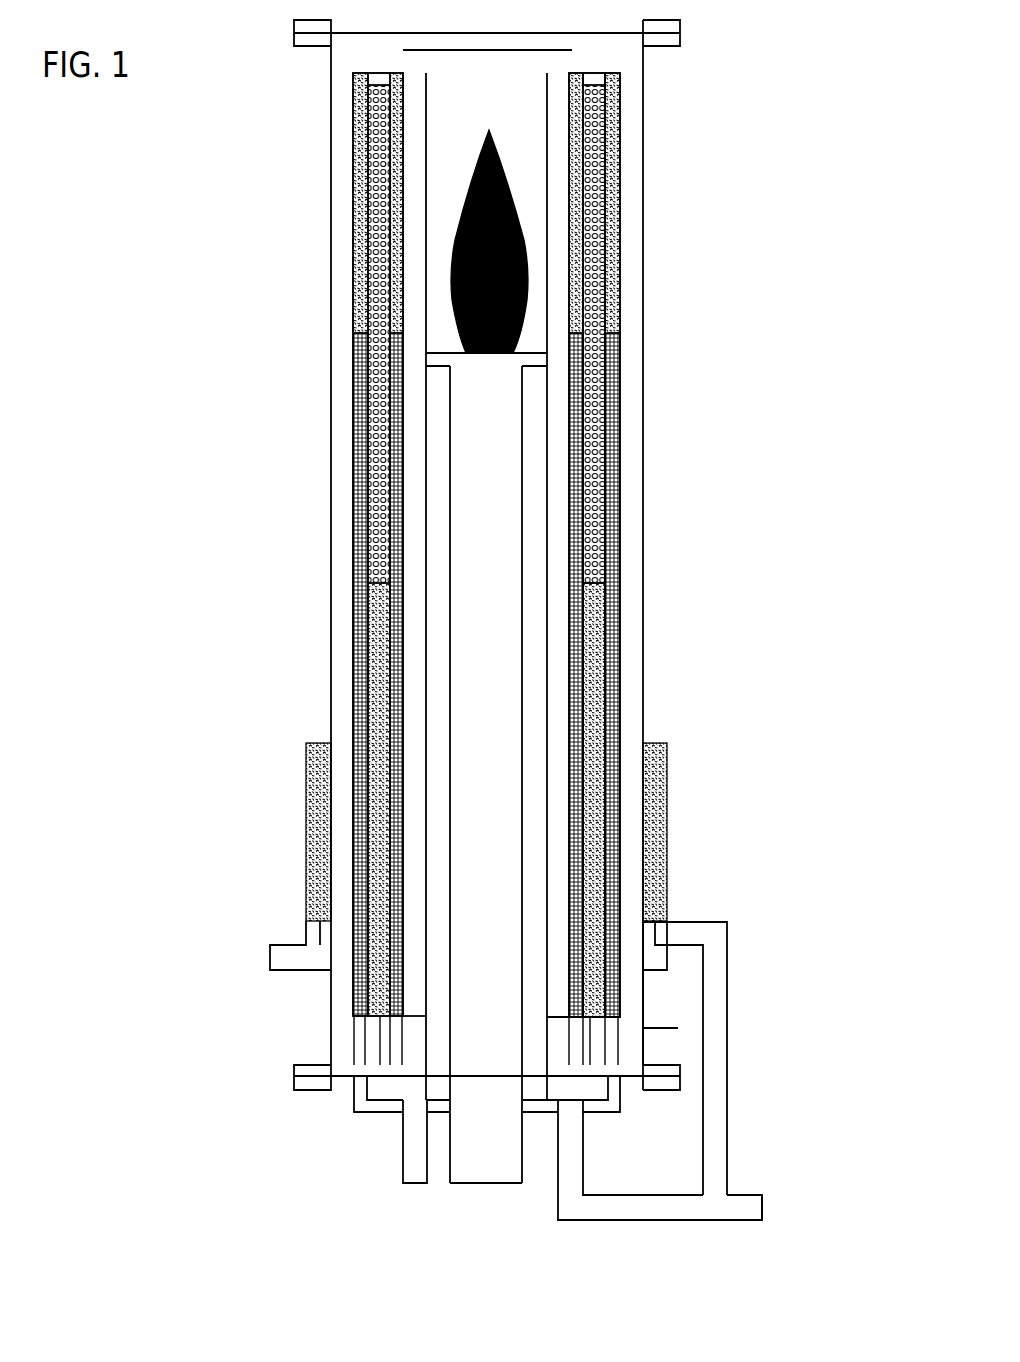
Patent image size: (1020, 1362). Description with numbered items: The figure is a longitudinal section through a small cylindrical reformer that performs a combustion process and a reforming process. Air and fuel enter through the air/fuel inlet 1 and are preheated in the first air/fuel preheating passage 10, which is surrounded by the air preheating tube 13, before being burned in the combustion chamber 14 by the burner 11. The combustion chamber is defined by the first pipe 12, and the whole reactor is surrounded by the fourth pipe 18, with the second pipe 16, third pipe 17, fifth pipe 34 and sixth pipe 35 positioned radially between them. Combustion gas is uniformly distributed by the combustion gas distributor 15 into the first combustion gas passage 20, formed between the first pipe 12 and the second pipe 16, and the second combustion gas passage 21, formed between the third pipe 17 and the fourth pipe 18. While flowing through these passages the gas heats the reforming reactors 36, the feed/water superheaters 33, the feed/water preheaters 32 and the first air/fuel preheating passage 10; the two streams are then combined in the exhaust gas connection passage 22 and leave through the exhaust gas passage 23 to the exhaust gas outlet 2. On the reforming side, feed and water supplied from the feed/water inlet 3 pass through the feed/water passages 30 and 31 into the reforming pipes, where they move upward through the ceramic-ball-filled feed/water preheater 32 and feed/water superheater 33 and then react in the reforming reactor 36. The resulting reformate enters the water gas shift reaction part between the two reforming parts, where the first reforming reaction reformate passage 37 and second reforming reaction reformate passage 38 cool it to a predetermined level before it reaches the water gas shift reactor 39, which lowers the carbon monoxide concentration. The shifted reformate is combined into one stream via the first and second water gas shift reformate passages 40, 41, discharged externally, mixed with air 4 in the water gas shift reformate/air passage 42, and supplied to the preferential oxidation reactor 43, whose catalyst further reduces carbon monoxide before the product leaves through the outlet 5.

The air/fuel inlet 1 is at (487, 1183).
The exhaust gas outlet 2 is at (665, 1017).
The feed/water inlet 3 is at (413, 1183).
The air 4 is at (752, 1208).
The outlet 5 is at (270, 948).
The first air/fuel preheating passage 10 is at (497, 622).
The burner 11 is at (490, 355).
The first pipe 12 is at (547, 657).
The air preheating tube 13 is at (532, 710).
The combustion chamber 14 is at (527, 238).
The combustion gas distributor 15 is at (557, 50).
The second pipe 16 is at (598, 413).
The third pipe 17 is at (625, 450).
The fourth pipe 18 is at (645, 488).
The first combustion gas passage 20 is at (618, 137).
The second combustion gas passage 21 is at (630, 183).
The exhaust gas connection passage 22 is at (595, 1047).
The exhaust gas passage 23 is at (632, 997).
The feed/water passage 30 is at (415, 1112).
The feed/water passage 31 is at (360, 1050).
The feed/water preheater 32 is at (353, 695).
The feed/water superheater 33 is at (353, 460).
The fifth pipe 34 is at (353, 373).
The sixth pipe 35 is at (353, 250).
The reforming reactor 36 is at (353, 212).
The first reforming reaction reformate passage 37 is at (353, 153).
The second reforming reaction reformate passage 38 is at (353, 408).
The water gas shift reactor 39 is at (353, 643).
The first water gas shift reformate passage 40 is at (378, 1030).
The second water gas shift reformate passage 41 is at (572, 1157).
The water gas shift reformate/air passage 42 is at (717, 958).
The preferential oxidation reactor 43 is at (306, 832).